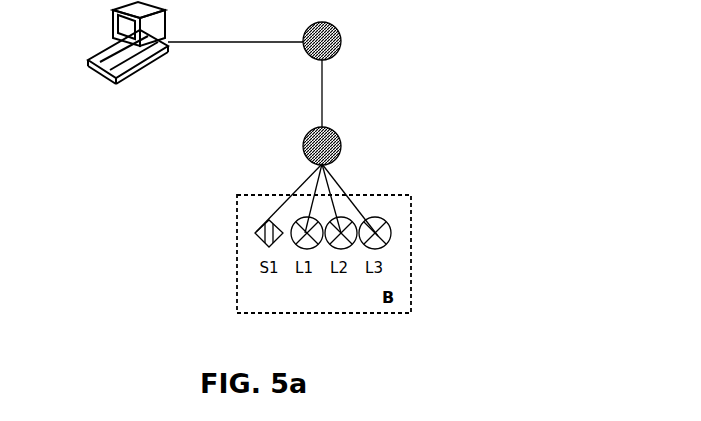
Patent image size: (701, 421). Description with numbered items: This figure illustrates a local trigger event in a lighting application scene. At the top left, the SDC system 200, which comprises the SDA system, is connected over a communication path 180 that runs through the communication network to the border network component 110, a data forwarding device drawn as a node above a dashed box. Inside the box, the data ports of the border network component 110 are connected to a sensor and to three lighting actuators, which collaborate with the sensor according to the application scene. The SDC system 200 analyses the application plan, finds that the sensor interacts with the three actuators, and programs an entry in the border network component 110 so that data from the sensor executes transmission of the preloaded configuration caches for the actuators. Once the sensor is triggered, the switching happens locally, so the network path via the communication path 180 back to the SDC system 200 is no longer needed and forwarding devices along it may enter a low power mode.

The SDC system 200 is at (102, 76).
The communication path 180 is at (350, 74).
The border network component 110 is at (414, 181).